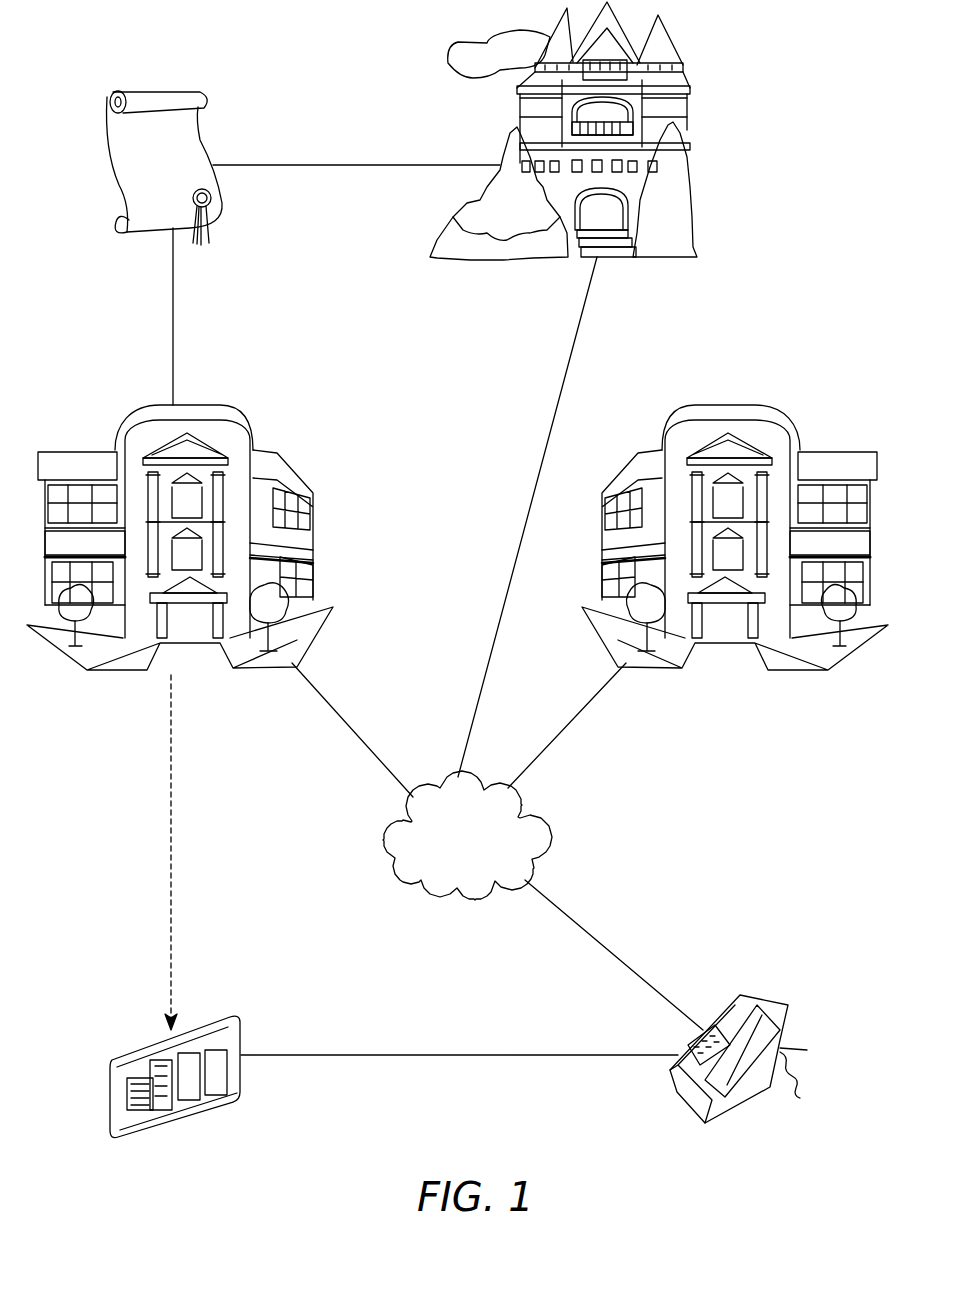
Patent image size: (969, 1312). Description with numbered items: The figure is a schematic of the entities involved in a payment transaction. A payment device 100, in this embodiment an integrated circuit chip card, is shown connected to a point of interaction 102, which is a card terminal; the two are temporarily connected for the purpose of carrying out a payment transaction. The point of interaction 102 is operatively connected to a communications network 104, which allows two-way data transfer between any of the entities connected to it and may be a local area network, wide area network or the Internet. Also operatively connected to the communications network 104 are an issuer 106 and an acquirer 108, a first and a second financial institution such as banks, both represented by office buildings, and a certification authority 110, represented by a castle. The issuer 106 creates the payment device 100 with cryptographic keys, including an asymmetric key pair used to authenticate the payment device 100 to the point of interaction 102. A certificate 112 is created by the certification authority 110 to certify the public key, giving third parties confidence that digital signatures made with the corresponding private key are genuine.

The payment device 100 is at (242, 1080).
The point of interaction 102 is at (788, 1007).
The communications network 104 is at (548, 832).
The issuer 106 is at (237, 412).
The acquirer 108 is at (680, 418).
The certification authority 110 is at (688, 105).
The certificate 112 is at (197, 122).